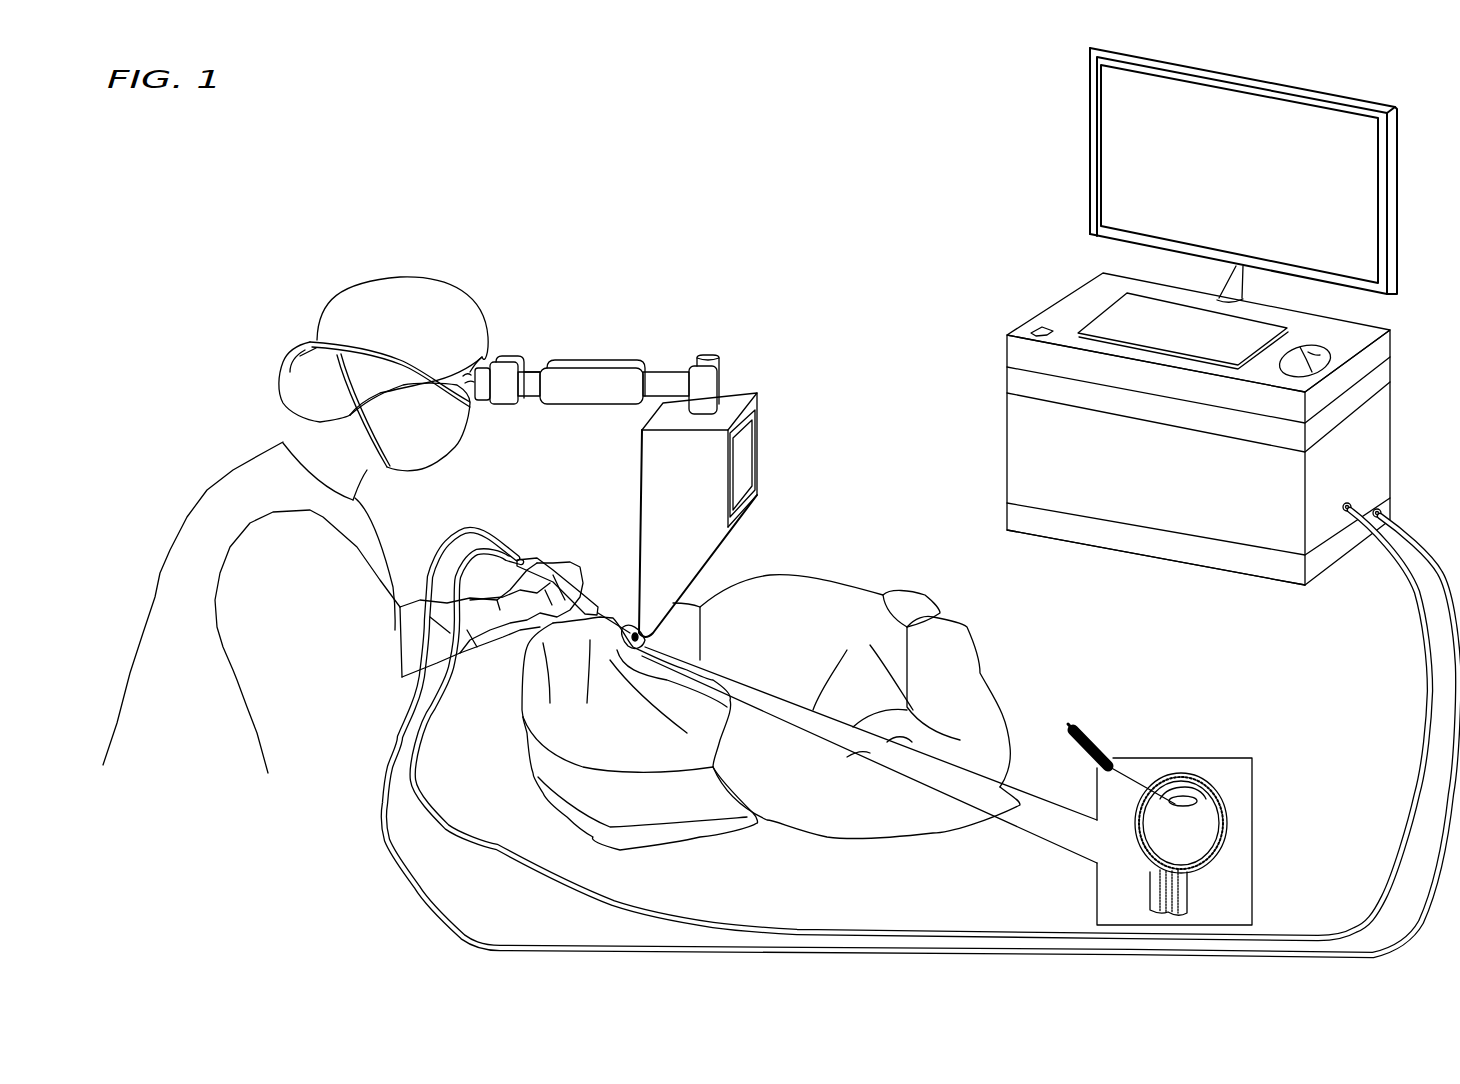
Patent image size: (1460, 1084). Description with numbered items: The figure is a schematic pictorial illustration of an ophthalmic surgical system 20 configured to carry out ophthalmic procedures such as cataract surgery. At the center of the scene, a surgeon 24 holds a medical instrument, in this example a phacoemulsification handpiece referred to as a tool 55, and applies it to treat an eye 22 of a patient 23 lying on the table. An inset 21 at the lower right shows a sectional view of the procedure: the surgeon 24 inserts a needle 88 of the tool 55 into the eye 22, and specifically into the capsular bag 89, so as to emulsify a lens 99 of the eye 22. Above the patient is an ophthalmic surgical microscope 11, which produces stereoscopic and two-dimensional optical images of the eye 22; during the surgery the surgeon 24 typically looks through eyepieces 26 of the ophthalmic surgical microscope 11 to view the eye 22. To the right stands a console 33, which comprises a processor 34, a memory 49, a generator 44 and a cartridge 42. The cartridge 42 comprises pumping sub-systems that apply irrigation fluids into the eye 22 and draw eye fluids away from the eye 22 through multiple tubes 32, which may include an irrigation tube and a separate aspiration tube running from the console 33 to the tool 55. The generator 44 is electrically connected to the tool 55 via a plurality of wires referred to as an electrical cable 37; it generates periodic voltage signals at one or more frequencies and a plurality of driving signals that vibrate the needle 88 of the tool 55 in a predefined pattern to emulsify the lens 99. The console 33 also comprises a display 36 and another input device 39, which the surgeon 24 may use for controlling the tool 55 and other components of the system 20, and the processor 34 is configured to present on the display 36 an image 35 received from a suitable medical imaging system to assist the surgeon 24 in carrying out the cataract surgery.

The ophthalmic surgical microscope 11 is at (747, 470).
The ophthalmic surgical system 20 is at (237, 192).
The inset 21 is at (1132, 757).
The eye 22 is at (1218, 789).
The patient 23 is at (780, 803).
The surgeon 24 is at (170, 562).
The eyepieces 26 is at (517, 362).
The tubes 32 is at (460, 832).
The console 33 is at (1241, 175).
The processor 34 is at (1017, 355).
The image 35 is at (1249, 190).
The display 36 is at (1092, 185).
The electrical cable 37 is at (383, 830).
The input device 39 is at (1162, 399).
The cartridge 42 is at (1023, 472).
The generator 44 is at (1017, 515).
The memory 49 is at (1023, 392).
The tool 55 is at (595, 578).
The needle 88 is at (1112, 770).
The capsular bag 89 is at (1162, 795).
The lens 99 is at (1185, 790).